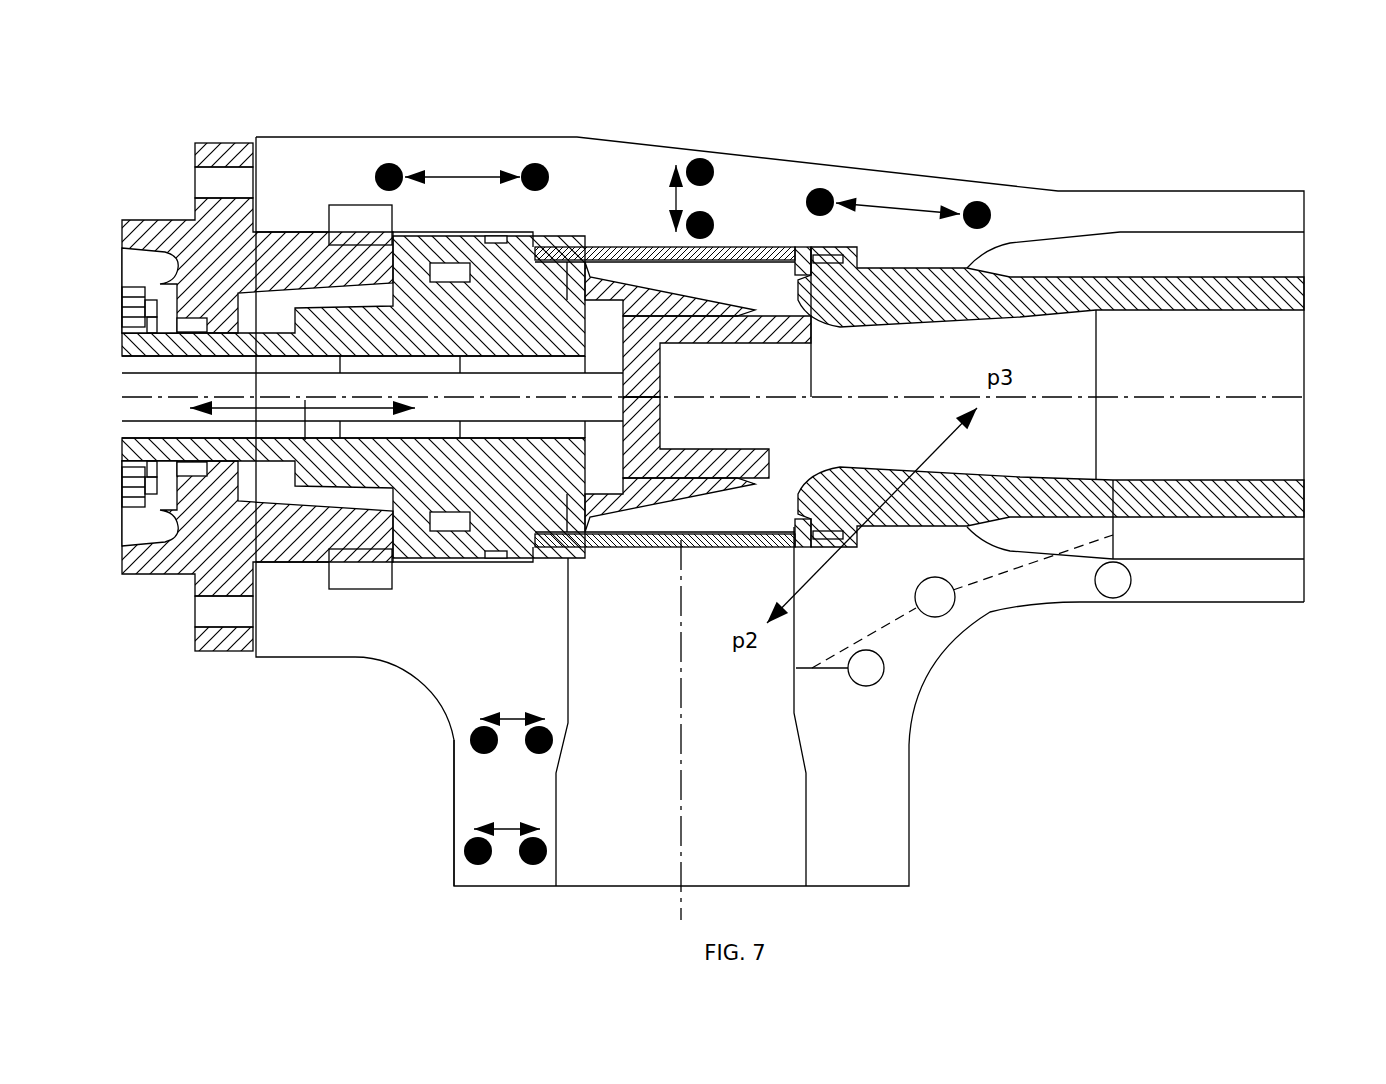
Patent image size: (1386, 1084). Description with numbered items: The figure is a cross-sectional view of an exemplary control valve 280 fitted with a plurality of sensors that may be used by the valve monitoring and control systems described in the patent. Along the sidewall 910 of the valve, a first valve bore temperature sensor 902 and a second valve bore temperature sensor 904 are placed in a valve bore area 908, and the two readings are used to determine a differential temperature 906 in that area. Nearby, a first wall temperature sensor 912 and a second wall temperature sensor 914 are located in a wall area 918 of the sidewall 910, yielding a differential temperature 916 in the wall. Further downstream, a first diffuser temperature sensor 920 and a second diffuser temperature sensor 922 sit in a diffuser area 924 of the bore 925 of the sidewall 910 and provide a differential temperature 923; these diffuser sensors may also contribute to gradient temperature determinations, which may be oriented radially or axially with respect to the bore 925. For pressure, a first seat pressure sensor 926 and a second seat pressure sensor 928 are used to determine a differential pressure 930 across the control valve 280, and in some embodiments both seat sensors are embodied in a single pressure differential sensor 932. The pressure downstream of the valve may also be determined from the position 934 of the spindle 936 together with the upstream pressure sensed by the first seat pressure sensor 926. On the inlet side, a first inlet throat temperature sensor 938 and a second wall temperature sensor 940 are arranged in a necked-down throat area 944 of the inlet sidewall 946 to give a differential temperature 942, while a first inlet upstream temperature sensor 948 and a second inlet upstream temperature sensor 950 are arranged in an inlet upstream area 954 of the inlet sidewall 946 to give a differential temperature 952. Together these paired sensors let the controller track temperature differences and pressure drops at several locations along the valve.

The control valve 280 is at (780, 464).
The first valve bore temperature sensor 902 is at (375, 177).
The second valve bore temperature sensor 904 is at (549, 177).
The differential temperature 906 is at (463, 161).
The valve bore area 908 is at (459, 129).
The sidewall 910 is at (581, 135).
The first wall temperature sensor 912 is at (712, 160).
The second wall temperature sensor 914 is at (687, 230).
The differential temperature 916 is at (675, 198).
The wall area 918 is at (682, 171).
The first diffuser temperature sensor 920 is at (828, 187).
The second diffuser temperature sensor 922 is at (980, 202).
The differential temperature 923 is at (918, 207).
The diffuser area 924 is at (930, 169).
The bore 925 is at (1286, 373).
The first seat pressure sensor 926 is at (866, 688).
The second seat pressure sensor 928 is at (1112, 600).
The differential pressure 930 is at (935, 450).
The pressure differential sensor 932 is at (948, 618).
The position 934 is at (305, 440).
The spindle 936 is at (135, 406).
The first inlet throat temperature sensor 938 is at (485, 755).
The second wall temperature sensor 940 is at (553, 742).
The differential temperature 942 is at (493, 701).
The necked-down throat area 944 is at (497, 736).
The inlet sidewall 946 is at (453, 777).
The first inlet upstream temperature sensor 948 is at (548, 851).
The second inlet upstream temperature sensor 950 is at (478, 865).
The differential temperature 952 is at (499, 811).
The inlet upstream area 954 is at (498, 852).